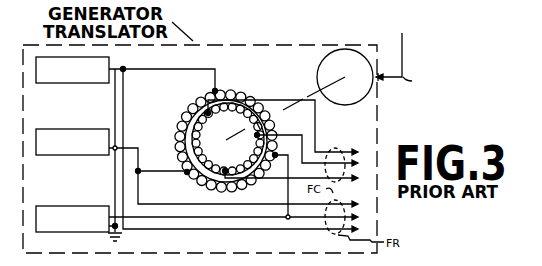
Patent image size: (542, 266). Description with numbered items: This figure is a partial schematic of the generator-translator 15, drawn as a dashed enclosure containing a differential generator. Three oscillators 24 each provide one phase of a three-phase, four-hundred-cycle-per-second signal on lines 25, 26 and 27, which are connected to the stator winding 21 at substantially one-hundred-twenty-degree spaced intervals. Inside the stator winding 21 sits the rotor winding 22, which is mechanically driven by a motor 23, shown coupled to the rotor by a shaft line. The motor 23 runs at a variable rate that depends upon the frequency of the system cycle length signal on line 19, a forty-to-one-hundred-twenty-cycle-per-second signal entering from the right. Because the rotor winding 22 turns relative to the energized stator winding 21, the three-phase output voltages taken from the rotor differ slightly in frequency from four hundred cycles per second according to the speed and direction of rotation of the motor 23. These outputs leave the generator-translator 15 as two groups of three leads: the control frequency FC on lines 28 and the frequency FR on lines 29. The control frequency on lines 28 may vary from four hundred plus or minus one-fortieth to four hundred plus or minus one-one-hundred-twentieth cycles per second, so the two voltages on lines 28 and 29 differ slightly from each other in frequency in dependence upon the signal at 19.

The generator-translator 15 is at (257, 46).
The system cycle length signal line 19 is at (403, 52).
The stator winding 21 is at (221, 89).
The rotor winding 22 is at (262, 100).
The motor 23 is at (323, 61).
The oscillators 24 is at (63, 84).
The oscillator output line 25 is at (146, 61).
The oscillator output line 26 is at (134, 147).
The oscillator output line 27 is at (133, 216).
The control frequency output lines 28 is at (337, 149).
The reference frequency output lines 29 is at (337, 202).